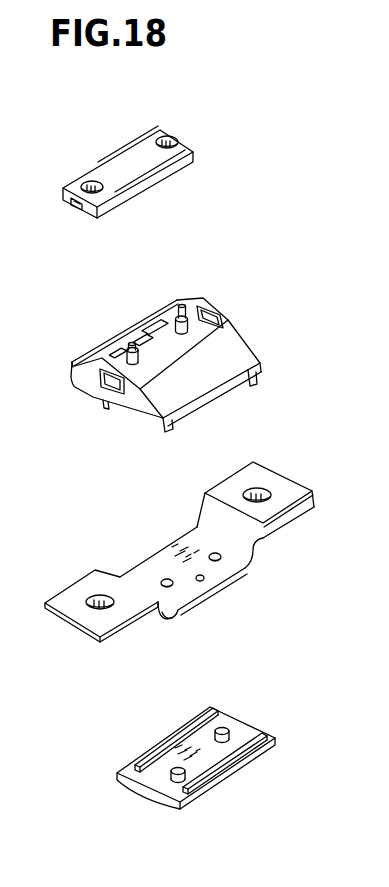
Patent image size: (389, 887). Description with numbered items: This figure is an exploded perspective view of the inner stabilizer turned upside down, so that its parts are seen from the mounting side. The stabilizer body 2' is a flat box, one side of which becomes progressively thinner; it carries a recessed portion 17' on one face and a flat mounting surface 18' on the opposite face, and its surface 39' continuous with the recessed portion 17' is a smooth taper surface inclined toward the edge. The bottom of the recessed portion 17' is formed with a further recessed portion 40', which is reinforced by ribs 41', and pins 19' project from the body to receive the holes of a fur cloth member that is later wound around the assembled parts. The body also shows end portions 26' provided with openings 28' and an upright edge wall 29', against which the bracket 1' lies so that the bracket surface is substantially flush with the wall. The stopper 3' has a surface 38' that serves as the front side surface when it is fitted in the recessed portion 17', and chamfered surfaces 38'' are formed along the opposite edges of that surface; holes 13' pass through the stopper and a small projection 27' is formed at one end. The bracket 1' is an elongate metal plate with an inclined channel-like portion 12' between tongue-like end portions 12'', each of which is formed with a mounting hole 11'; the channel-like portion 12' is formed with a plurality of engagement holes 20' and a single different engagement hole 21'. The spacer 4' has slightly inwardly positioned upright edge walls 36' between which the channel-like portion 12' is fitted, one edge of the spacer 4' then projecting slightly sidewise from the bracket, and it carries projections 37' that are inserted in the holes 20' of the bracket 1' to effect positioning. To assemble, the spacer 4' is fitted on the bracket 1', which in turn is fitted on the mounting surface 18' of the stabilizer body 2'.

The bracket 1' is at (194, 560).
The stabilizer body 2' is at (170, 369).
The stopper 3' is at (123, 169).
The spacer 4' is at (180, 762).
The terminal holes 11' is at (198, 522).
The channel-like portion 12' is at (182, 561).
The terminal pads 12'' is at (202, 571).
The cover plate holes 13' is at (140, 147).
The recessed portion 17' is at (171, 367).
The mounting surface 18' is at (134, 435).
The pins 19' is at (142, 315).
The engagement holes 20' is at (216, 608).
The engagement hole 21' is at (213, 604).
The end wall 26' is at (193, 378).
The projection on cover plate 27' is at (57, 216).
The slots in end walls 28' is at (145, 340).
The upright edge wall 29' is at (180, 420).
The upright edge wall 36' is at (199, 755).
The projections 37' is at (210, 762).
The surface 38' is at (128, 183).
The chamfered surfaces 38'' is at (158, 154).
The taper surface 39' is at (230, 369).
The further recessed portion 40' is at (149, 300).
The ribs 41' is at (129, 322).